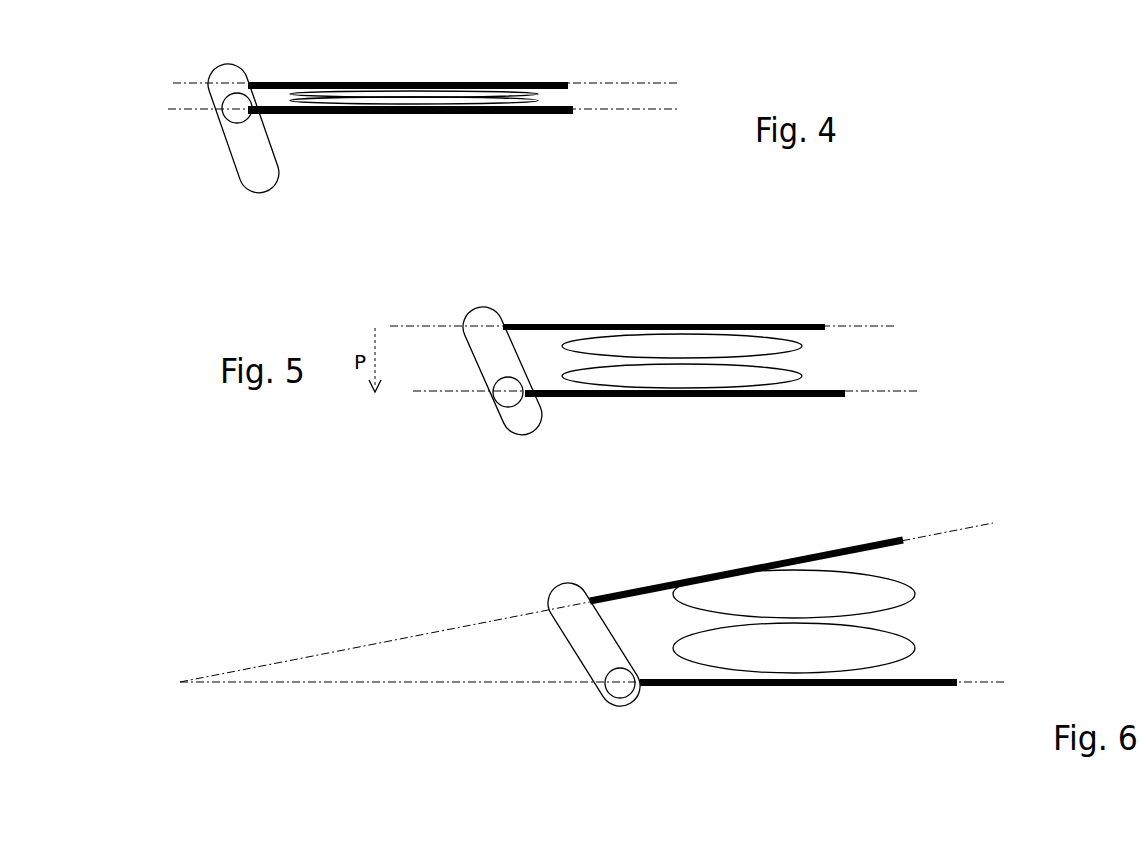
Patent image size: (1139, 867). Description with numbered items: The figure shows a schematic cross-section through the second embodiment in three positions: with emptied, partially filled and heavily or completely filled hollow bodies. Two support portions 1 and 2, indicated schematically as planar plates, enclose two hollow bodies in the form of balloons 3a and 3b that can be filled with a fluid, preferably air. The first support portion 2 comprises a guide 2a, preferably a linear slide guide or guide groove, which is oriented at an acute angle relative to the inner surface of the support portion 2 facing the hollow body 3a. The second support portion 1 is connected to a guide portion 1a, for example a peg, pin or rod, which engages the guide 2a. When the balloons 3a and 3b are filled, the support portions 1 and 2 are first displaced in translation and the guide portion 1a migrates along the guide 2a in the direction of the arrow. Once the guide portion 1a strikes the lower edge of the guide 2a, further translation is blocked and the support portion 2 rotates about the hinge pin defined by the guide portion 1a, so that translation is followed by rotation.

In FIG. 4, the second support portion 1 is at (408, 116).
In FIG. 5, the second support portion 1 is at (787, 398).
In FIG. 6, the second support portion 1 is at (765, 683).
In FIG. 4, the guide portion 1a is at (267, 170).
In FIG. 5, the guide portion 1a is at (495, 393).
In FIG. 6, the guide portion 1a is at (602, 692).
In FIG. 4, the first support portion 2 is at (520, 82).
In FIG. 5, the first support portion 2 is at (740, 323).
In FIG. 6, the first support portion 2 is at (870, 542).
In FIG. 4, the guide 2a is at (250, 187).
In FIG. 5, the guide 2a is at (475, 360).
In FIG. 6, the guide 2a is at (555, 625).
In FIG. 4, the balloon 3a is at (395, 82).
In FIG. 5, the balloon 3a is at (743, 346).
In FIG. 6, the balloon 3a is at (847, 610).
In FIG. 4, the balloon 3b is at (433, 100).
In FIG. 5, the balloon 3b is at (755, 377).
In FIG. 6, the balloon 3b is at (858, 643).